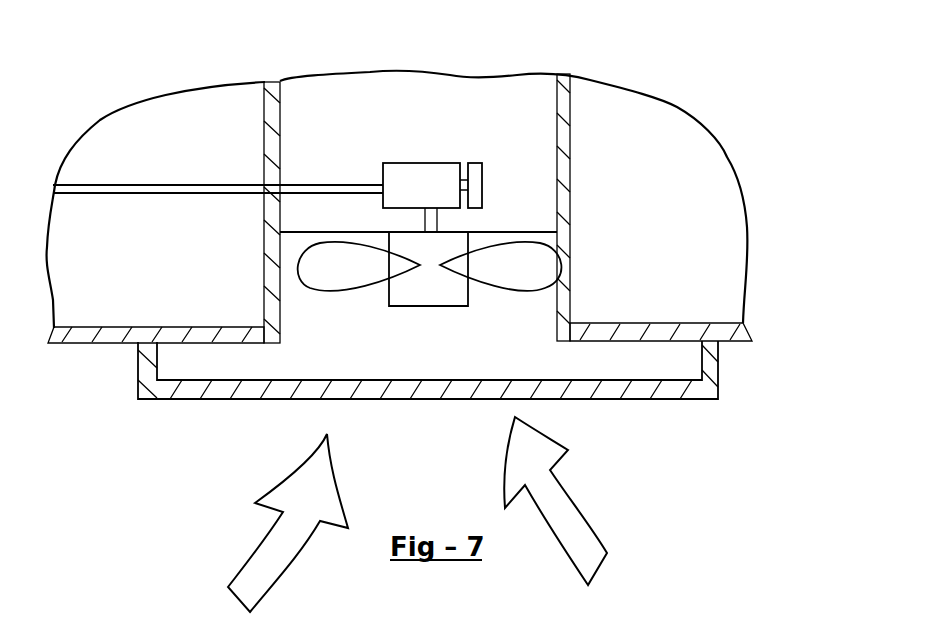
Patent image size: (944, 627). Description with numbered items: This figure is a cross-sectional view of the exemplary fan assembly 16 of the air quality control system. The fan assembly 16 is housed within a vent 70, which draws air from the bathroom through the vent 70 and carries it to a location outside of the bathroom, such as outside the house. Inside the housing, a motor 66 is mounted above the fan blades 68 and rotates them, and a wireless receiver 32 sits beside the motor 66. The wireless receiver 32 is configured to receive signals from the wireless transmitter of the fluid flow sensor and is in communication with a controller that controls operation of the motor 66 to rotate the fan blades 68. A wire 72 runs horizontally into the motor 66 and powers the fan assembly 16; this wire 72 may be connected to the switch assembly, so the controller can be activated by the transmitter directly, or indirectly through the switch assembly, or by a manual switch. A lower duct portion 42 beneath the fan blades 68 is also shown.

The fan assembly 16 is at (684, 197).
The wireless receiver 32 is at (483, 177).
The fan housing 42 is at (433, 291).
The motor 66 is at (407, 175).
The fan blades 68 is at (532, 268).
The vent 70 is at (571, 191).
The wire 72 is at (213, 197).